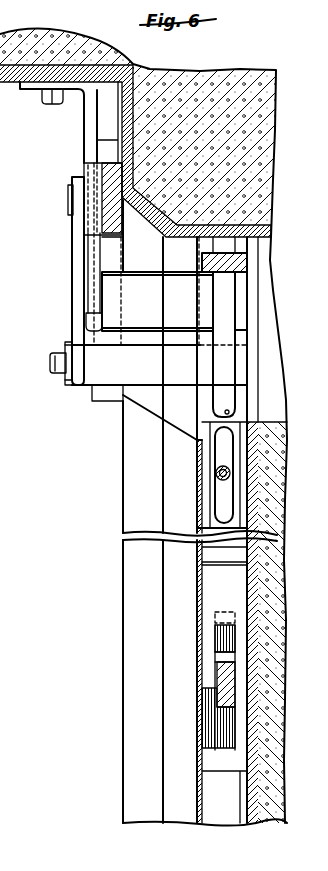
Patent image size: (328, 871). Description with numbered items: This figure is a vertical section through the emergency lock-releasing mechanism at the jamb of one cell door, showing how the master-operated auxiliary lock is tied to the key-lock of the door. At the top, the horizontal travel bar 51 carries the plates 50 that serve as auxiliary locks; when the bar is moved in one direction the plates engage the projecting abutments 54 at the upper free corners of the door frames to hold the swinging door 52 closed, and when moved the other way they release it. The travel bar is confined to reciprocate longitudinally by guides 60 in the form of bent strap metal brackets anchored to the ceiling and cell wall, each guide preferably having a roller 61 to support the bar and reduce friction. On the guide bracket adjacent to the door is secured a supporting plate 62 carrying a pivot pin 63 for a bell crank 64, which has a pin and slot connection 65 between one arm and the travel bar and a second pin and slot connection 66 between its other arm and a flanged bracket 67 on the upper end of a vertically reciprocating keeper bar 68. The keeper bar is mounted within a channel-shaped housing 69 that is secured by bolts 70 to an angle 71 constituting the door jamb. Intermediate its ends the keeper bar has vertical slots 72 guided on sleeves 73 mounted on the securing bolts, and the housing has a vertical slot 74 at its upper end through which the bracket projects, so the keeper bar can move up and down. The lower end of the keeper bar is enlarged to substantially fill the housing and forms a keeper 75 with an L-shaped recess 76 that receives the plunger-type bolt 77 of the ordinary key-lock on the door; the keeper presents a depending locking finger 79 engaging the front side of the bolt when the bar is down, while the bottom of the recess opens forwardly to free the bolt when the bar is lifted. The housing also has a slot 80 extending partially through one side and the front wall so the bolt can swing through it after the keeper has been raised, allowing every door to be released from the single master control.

The plates 50 is at (90, 286).
The horizontal travel bar 51 is at (107, 160).
The swinging door 52 is at (247, 262).
The projecting abutments 54 is at (152, 292).
The guides 60 is at (92, 123).
The roller 61 is at (110, 255).
The supporting plate 62 is at (100, 392).
The pivot pin 63 is at (50, 363).
The bell crank 64 is at (80, 257).
The pin and slot connection 65 is at (68, 192).
The pin and slot connection 66 is at (63, 373).
The flanged bracket 67 is at (137, 372).
The keeper bar 68 is at (208, 515).
The channel-shaped housing 69 is at (200, 792).
The bolts 70 is at (221, 479).
The angle 71 is at (255, 817).
The vertical slots 72 is at (213, 450).
The sleeves 73 is at (240, 415).
The vertical slot 74 is at (205, 467).
The keeper 75 is at (213, 580).
The L-shaped recess 76 is at (220, 638).
The plunger-type bolt 77 is at (222, 697).
The depending locking finger 79 is at (212, 662).
The slot 80 is at (223, 695).